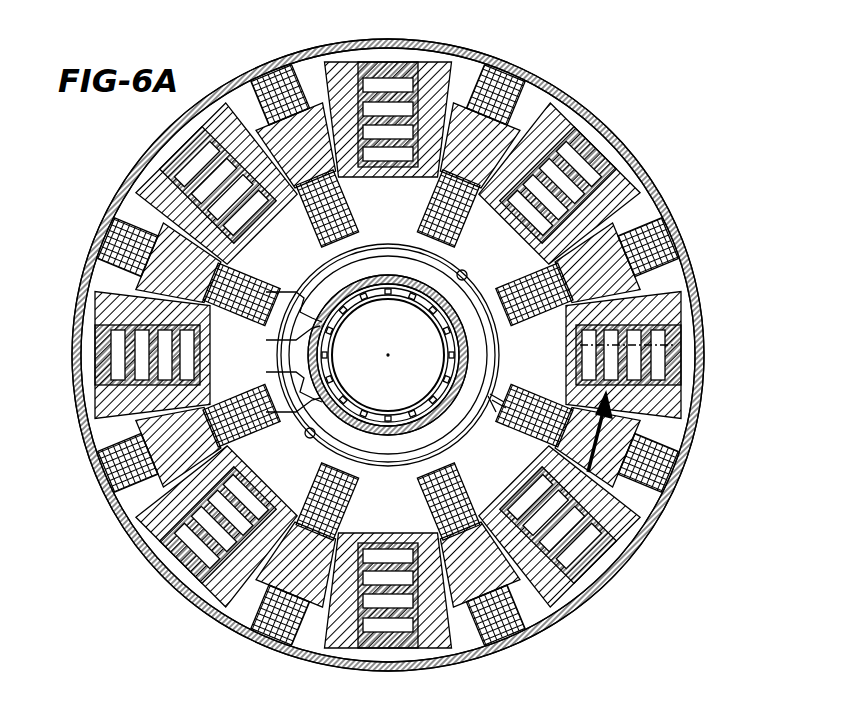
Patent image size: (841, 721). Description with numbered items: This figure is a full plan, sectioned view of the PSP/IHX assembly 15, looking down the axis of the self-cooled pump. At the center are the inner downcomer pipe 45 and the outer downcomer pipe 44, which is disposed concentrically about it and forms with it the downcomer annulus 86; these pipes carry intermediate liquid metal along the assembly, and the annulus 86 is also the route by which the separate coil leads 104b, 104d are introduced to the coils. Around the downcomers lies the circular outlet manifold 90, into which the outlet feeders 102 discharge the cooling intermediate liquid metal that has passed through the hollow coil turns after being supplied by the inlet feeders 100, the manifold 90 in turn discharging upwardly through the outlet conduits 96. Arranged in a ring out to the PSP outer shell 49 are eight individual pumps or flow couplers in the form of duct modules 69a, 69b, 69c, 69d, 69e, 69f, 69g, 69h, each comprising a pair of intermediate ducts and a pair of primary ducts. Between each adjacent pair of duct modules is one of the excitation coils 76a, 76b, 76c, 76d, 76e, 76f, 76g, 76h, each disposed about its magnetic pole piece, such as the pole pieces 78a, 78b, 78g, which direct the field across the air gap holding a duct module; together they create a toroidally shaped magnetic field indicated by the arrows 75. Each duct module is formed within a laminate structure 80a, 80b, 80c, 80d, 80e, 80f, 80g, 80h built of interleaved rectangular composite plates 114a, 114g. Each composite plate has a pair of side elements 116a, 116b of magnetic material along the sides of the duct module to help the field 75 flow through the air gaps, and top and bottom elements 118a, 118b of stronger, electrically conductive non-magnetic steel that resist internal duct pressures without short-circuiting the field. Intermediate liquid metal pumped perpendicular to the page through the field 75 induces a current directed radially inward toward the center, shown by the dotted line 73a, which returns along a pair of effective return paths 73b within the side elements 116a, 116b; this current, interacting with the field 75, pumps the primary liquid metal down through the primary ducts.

The PSP/IHX assembly 15 is at (570, 60).
The outer downcomer pipe 44 is at (412, 270).
The inner downcomer pipe 45 is at (438, 316).
The PSP outer shell 49 is at (686, 302).
The duct module 69a is at (381, 652).
The duct module 69b is at (154, 565).
The duct module 69c is at (98, 355).
The duct module 69d is at (181, 152).
The duct module 69e is at (400, 68).
The duct module 69f is at (602, 152).
The duct module 69g is at (676, 366).
The duct module 69h is at (626, 571).
The current flow path 73a is at (660, 345).
The effective return paths 73b is at (668, 420).
The magnetic field 75 is at (560, 438).
The excitation coil 76a is at (542, 650).
The excitation coil 76b is at (272, 655).
The excitation coil 76c is at (127, 510).
The excitation coil 76d is at (120, 218).
The excitation coil 76e is at (272, 64).
The excitation coil 76f is at (508, 78).
The excitation coil 76g is at (689, 258).
The excitation coil 76h is at (673, 494).
The magnetic pole piece 78a is at (576, 611).
The magnetic pole piece 78b is at (246, 634).
The magnetic pole piece 78g is at (644, 208).
The laminate structure 80a is at (452, 651).
The laminate structure 80b is at (192, 610).
The laminate structure 80c is at (96, 410).
The laminate structure 80d is at (140, 196).
The laminate structure 80e is at (346, 60).
The laminate structure 80f is at (568, 112).
The laminate structure 80g is at (684, 292).
The laminate structure 80h is at (638, 548).
The downcomer annulus 86 is at (438, 396).
The outlet manifold 90 is at (455, 261).
The outlet conduit 96 is at (470, 274).
The inlet feeder 100 is at (493, 414).
The outlet feeder 102 is at (506, 396).
The coil leads 104b is at (358, 431).
The coil leads 104d is at (312, 292).
The composite plate 114a is at (400, 528).
The composite plate 114g is at (682, 405).
The side element 116a is at (568, 379).
The side element 116b is at (569, 327).
The top element 118a is at (679, 330).
The bottom element 118b is at (578, 344).